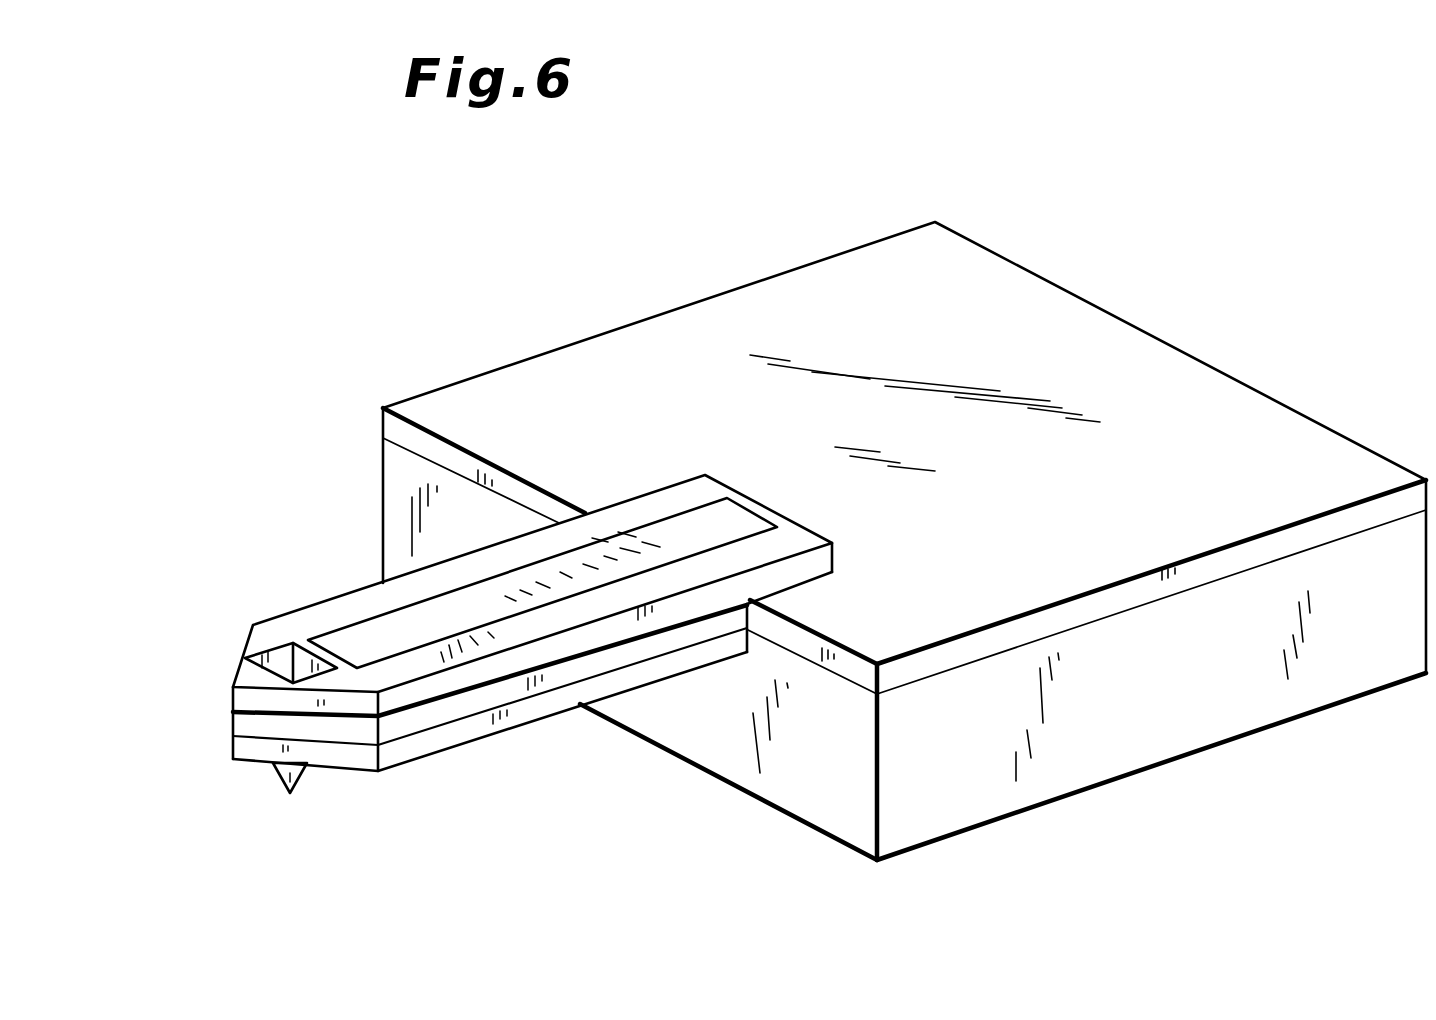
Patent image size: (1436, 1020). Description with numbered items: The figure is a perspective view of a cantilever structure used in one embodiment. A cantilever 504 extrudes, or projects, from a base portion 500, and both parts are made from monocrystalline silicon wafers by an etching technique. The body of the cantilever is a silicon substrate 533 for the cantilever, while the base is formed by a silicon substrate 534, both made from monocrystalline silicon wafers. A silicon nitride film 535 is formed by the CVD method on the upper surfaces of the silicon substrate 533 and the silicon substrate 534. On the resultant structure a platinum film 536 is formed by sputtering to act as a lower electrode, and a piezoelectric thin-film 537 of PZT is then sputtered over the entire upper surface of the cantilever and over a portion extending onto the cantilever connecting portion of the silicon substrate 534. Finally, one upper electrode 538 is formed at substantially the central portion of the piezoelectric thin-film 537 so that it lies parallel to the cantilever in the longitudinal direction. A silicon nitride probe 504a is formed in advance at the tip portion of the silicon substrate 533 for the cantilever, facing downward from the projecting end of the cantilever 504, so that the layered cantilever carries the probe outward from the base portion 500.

The base portion 500 is at (882, 527).
The cantilever 504 is at (485, 669).
The silicon nitride probe 504a is at (278, 777).
The silicon substrate for the cantilever 533 is at (547, 705).
The silicon substrate 534 is at (1200, 722).
The silicon nitride film 535 is at (647, 648).
The platinum film 536 is at (1172, 363).
The piezoelectric thin-film 537 is at (327, 612).
The upper electrode 538 is at (385, 627).